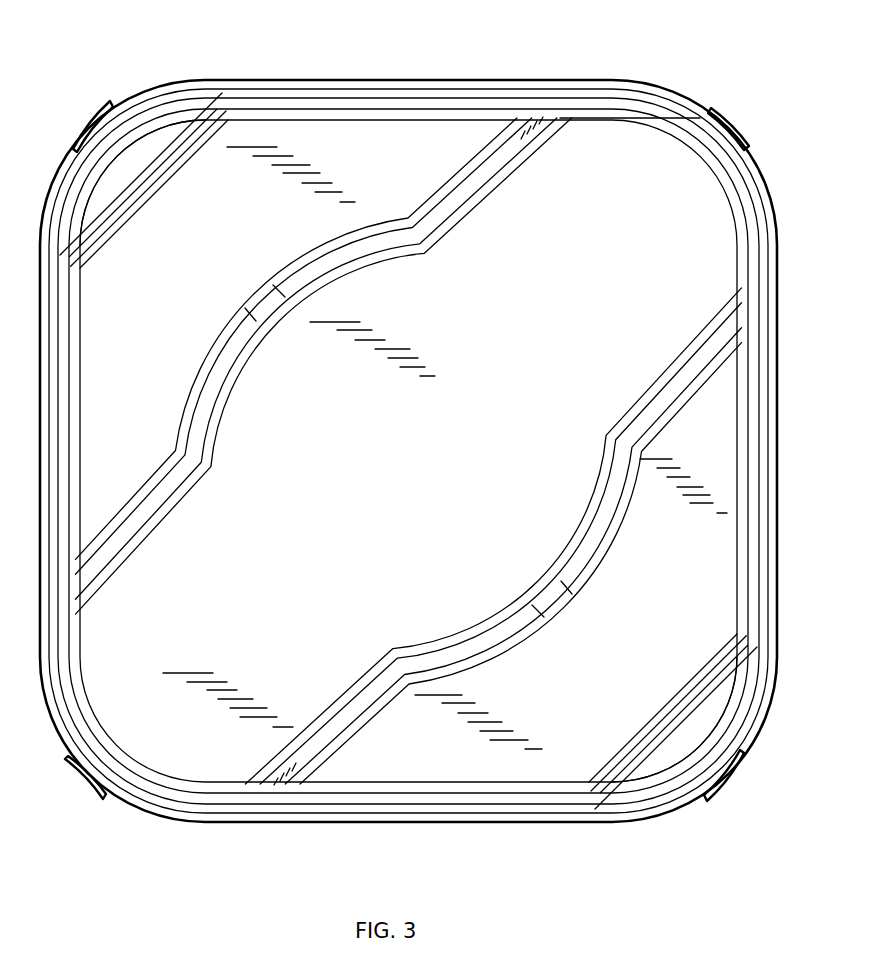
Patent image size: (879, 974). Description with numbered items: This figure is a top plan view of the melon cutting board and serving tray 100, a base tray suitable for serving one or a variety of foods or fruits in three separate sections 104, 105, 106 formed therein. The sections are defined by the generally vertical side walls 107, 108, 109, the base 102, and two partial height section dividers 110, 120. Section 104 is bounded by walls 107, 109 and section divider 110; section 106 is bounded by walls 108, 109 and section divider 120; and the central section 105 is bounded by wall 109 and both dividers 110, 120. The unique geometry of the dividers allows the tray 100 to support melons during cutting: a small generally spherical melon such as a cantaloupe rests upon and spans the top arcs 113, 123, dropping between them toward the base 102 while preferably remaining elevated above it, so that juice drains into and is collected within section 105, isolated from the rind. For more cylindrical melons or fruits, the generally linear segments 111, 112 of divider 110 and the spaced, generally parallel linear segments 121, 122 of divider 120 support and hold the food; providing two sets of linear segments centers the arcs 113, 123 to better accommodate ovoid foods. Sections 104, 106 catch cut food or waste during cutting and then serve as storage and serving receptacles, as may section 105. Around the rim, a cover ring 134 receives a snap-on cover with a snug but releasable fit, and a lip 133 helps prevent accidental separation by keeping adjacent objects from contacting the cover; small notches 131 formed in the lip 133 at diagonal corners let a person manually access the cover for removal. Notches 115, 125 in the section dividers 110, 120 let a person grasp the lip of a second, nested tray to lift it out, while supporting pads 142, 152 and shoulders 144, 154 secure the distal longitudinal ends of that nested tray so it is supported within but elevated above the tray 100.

The melon cutting board and serving tray 100 is at (408, 479).
The base 102 is at (434, 490).
The section 104 is at (590, 747).
The section 105 is at (625, 190).
The section 106 is at (325, 155).
The generally vertical side wall 107 is at (717, 663).
The generally vertical side wall 108 is at (194, 157).
The generally vertical side wall 109 is at (520, 790).
The section divider 110 is at (493, 497).
The generally linear segment 111 is at (520, 563).
The generally linear segment 112 is at (340, 737).
The top arc 113 is at (665, 386).
The notch 115 is at (508, 556).
The section divider 120 is at (324, 365).
The generally linear segment 121 is at (435, 214).
The generally linear segment 122 is at (187, 487).
The top arc 123 is at (237, 350).
The notch 125 is at (247, 304).
The notch 131 is at (720, 135).
The lip 133 is at (444, 75).
The cover ring 134 is at (497, 90).
The supporting pad 142 is at (670, 760).
The shoulder 144 is at (720, 737).
The supporting pad 152 is at (140, 155).
The shoulder 154 is at (177, 117).